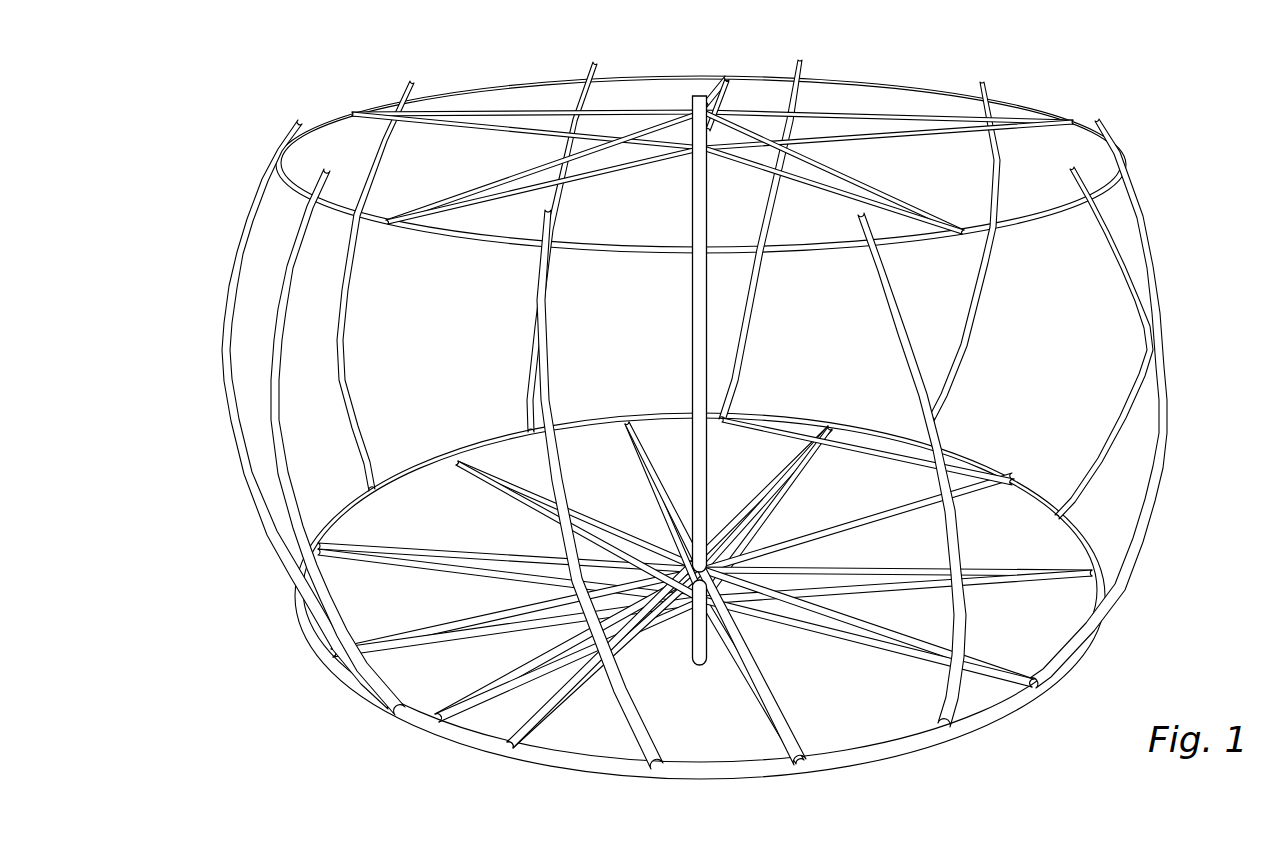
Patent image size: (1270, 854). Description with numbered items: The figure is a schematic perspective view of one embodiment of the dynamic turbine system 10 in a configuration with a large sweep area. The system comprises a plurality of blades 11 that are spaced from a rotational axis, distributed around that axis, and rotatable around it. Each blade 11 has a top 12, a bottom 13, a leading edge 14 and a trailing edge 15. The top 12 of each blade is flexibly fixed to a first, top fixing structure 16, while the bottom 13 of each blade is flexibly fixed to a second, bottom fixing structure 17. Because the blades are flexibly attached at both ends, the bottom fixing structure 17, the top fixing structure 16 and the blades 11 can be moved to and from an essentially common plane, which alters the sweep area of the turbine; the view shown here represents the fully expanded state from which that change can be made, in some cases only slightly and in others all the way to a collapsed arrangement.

The dynamic turbine system 10 is at (695, 419).
The blades 11 is at (222, 350).
The top 12 is at (282, 145).
The bottom 13 is at (297, 587).
The leading edge 14 is at (893, 320).
The trailing edge 15 is at (903, 308).
The top fixing structure 16 is at (583, 247).
The bottom fixing structure 17 is at (437, 718).